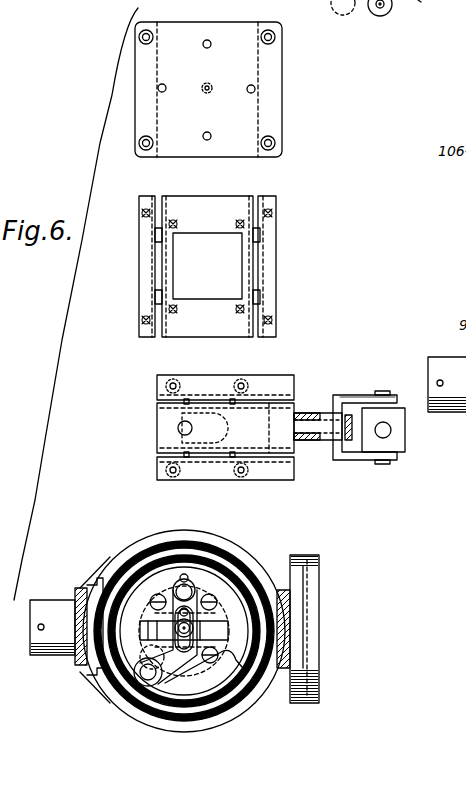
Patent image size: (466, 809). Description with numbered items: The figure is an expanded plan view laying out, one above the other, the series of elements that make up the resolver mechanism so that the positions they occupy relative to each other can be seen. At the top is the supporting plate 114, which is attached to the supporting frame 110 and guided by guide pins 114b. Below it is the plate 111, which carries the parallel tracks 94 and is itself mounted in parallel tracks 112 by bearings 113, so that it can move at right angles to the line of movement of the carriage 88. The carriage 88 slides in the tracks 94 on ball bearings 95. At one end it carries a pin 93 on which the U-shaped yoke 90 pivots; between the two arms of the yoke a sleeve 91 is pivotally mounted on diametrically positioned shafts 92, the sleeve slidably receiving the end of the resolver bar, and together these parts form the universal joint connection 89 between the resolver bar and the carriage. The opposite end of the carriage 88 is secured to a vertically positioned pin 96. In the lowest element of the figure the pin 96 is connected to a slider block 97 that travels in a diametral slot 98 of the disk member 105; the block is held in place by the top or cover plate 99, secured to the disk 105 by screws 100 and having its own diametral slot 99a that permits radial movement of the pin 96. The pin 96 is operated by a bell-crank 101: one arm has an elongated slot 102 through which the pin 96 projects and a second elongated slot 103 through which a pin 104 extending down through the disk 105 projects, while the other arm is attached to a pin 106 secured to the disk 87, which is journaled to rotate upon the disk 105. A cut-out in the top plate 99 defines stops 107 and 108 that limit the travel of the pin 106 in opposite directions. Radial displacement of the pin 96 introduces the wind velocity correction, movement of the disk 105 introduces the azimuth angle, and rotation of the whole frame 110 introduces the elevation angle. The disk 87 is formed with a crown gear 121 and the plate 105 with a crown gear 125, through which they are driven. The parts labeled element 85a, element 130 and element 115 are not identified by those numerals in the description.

The shaft 85a is at (424, 11).
The roller 130 is at (372, 15).
The supporting plate 114 is at (209, 156).
The guide pins 114b is at (250, 85).
The plate 111 is at (195, 330).
The parallel tracks 112 is at (143, 280).
The bearings 113 is at (155, 300).
The parallel tracks 94 is at (275, 376).
The ball bearings 95 is at (182, 413).
The carriage 88 is at (290, 405).
The pin 93 is at (318, 440).
The U-shaped yoke 90 is at (362, 460).
The universal joint connection 89 is at (345, 395).
The sleeve 91 is at (395, 440).
The diametrically positioned shafts 92 is at (385, 391).
The supporting base or frame 110 is at (260, 553).
The screws 100 is at (125, 603).
The disk member 105 is at (250, 592).
The diametral slot 98 is at (272, 602).
The pin 104 is at (152, 596).
The diametral slot 99a is at (118, 592).
The slider block 97 is at (107, 673).
The plate 115 is at (322, 573).
The crown gear 121 is at (319, 672).
The bell-crank 101 is at (177, 585).
The elongated slot 103 is at (196, 575).
The pin 106 is at (150, 668).
The elongated slot 102 is at (95, 712).
The pin 96 is at (230, 628).
The top or cover plate 99 is at (237, 645).
The stop 107 is at (123, 678).
The stop 108 is at (192, 672).
The disk 87 is at (220, 680).
The crown gear 125 is at (250, 692).